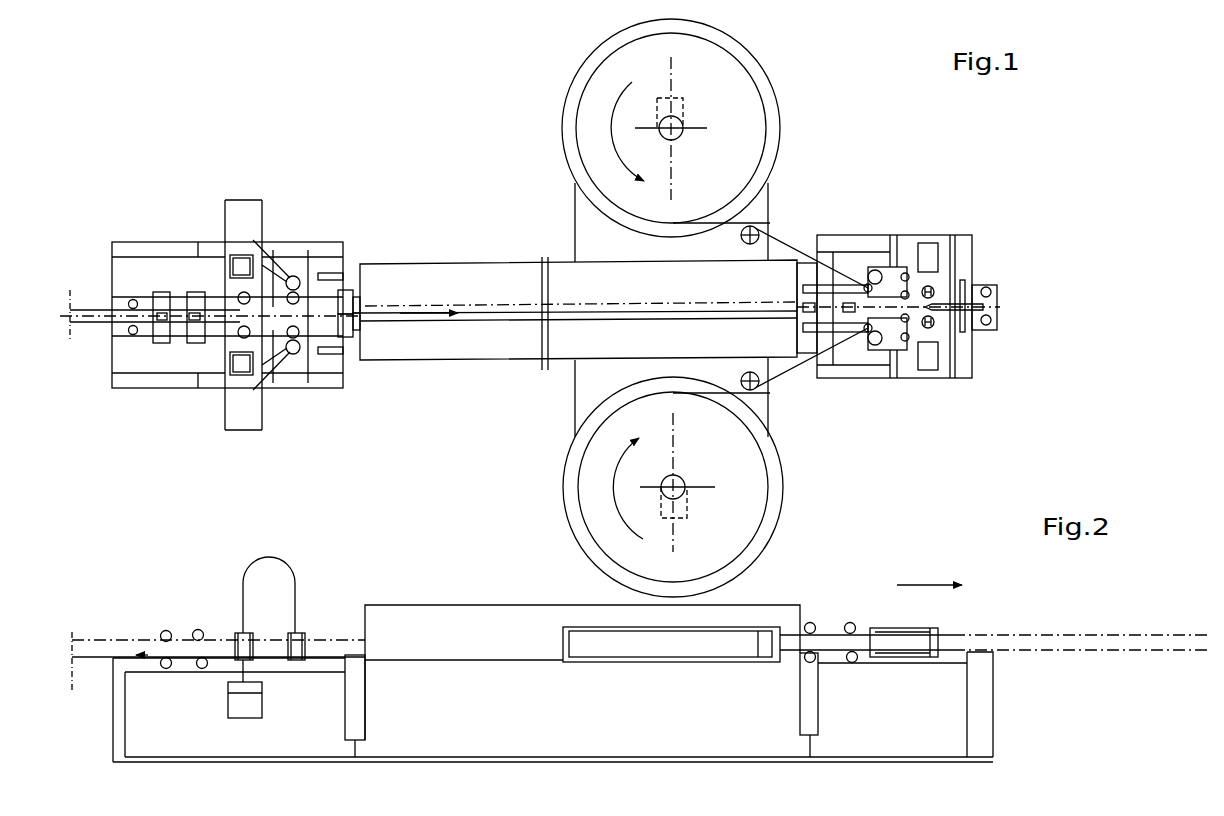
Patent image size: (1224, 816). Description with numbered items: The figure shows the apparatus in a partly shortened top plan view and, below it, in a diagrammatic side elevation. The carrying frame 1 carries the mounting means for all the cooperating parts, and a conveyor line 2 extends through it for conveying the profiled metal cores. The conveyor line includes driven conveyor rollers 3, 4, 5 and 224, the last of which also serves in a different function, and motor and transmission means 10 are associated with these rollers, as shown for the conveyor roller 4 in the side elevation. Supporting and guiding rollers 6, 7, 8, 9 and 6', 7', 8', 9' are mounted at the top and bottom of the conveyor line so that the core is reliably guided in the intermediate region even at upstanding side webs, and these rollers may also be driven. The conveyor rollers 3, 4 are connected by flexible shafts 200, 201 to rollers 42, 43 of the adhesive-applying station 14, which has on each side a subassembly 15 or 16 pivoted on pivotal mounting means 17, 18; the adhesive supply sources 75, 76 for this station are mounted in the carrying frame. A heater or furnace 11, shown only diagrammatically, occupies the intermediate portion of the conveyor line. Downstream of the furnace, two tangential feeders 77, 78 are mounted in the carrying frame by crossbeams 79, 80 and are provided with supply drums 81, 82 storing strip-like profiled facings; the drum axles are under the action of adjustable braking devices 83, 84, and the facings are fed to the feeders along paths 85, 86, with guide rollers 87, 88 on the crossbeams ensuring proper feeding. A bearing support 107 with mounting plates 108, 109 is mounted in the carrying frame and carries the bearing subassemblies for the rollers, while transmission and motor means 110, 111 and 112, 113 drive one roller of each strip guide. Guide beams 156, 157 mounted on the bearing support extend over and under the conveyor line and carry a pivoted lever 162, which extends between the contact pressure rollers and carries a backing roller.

In FIG. 1, the carrying frame 1 is at (463, 366).
In FIG. 2, the carrying frame 1 is at (434, 622).
In FIG. 1, the conveyor line 2 is at (406, 300).
In FIG. 2, the conveyor line 2 is at (1086, 632).
In FIG. 1, the conveyor roller 3 is at (238, 298).
In FIG. 1, the conveyor roller 4 is at (238, 332).
In FIG. 2, the conveyor roller 4 is at (250, 636).
In FIG. 1, the conveyor roller 5 is at (938, 300).
In FIG. 1, the supporting and guiding roller 6 is at (150, 358).
In FIG. 2, the supporting and guiding roller 6 is at (163, 689).
In FIG. 1, the supporting and guiding roller 7 is at (195, 358).
In FIG. 2, the supporting and guiding roller 7 is at (202, 689).
In FIG. 2, the supporting and guiding roller 8 is at (158, 611).
In FIG. 2, the supporting and guiding roller 9 is at (202, 610).
In FIG. 2, the motor and transmission means 10 is at (258, 707).
In FIG. 1, the heater or furnace 11 is at (485, 268).
In FIG. 2, the heater or furnace 11 is at (490, 608).
In FIG. 1, the adhesive-applying station 14 is at (299, 240).
In FIG. 1, the subassembly 15 is at (306, 268).
In FIG. 1, the subassembly 16 is at (310, 360).
In FIG. 1, the pivotal mounting means 17 is at (330, 272).
In FIG. 1, the pivotal mounting means 18 is at (333, 353).
In FIG. 1, the roller of the adhesive-applying station 42 is at (345, 336).
In FIG. 2, the roller of the adhesive-applying station 42 is at (303, 634).
In FIG. 1, the roller of the adhesive-applying station 43 is at (345, 292).
In FIG. 1, the adhesive supply source 75 is at (240, 206).
In FIG. 1, the adhesive supply source 76 is at (240, 424).
In FIG. 1, the tangential feeder 77 is at (893, 280).
In FIG. 1, the tangential feeder 78 is at (897, 380).
In FIG. 1, the crossbeam 79 is at (582, 236).
In FIG. 1, the crossbeam 80 is at (588, 387).
In FIG. 1, the supply drum 81 is at (597, 95).
In FIG. 1, the supply drum 82 is at (597, 521).
In FIG. 2, the supply drum 82 is at (667, 660).
In FIG. 1, the adjustable braking device 83 is at (681, 112).
In FIG. 1, the adjustable braking device 84 is at (683, 500).
In FIG. 1, the path 85 is at (796, 245).
In FIG. 1, the path 86 is at (790, 378).
In FIG. 1, the guide roller 87 is at (758, 232).
In FIG. 1, the guide roller 88 is at (758, 387).
In FIG. 1, the bearing support 107 is at (846, 380).
In FIG. 1, the mounting plate 108 is at (886, 350).
In FIG. 1, the mounting plate 109 is at (880, 268).
In FIG. 1, the transmission and motor means 110 is at (931, 287).
In FIG. 1, the transmission and motor means 111 is at (958, 358).
In FIG. 1, the transmission and motor means 112 is at (930, 250).
In FIG. 1, the transmission and motor means 113 is at (931, 362).
In FIG. 1, the upper guide beam 156 is at (988, 297).
In FIG. 1, the lower guide beam 157 is at (986, 306).
In FIG. 1, the pivoted lever 162 is at (964, 290).
In FIG. 1, the flexible shaft 200 is at (290, 352).
In FIG. 2, the flexible shaft 200 is at (290, 570).
In FIG. 1, the flexible shaft 201 is at (265, 300).
In FIG. 1, the conveyor roller 224 is at (936, 327).
In FIG. 2, the conveyor roller 224 is at (935, 658).
In FIG. 2, the supporting and guiding roller 6' is at (792, 679).
In FIG. 2, the supporting and guiding roller 7' is at (849, 679).
In FIG. 2, the supporting and guiding roller 8' is at (816, 604).
In FIG. 2, the supporting and guiding roller 9' is at (855, 604).